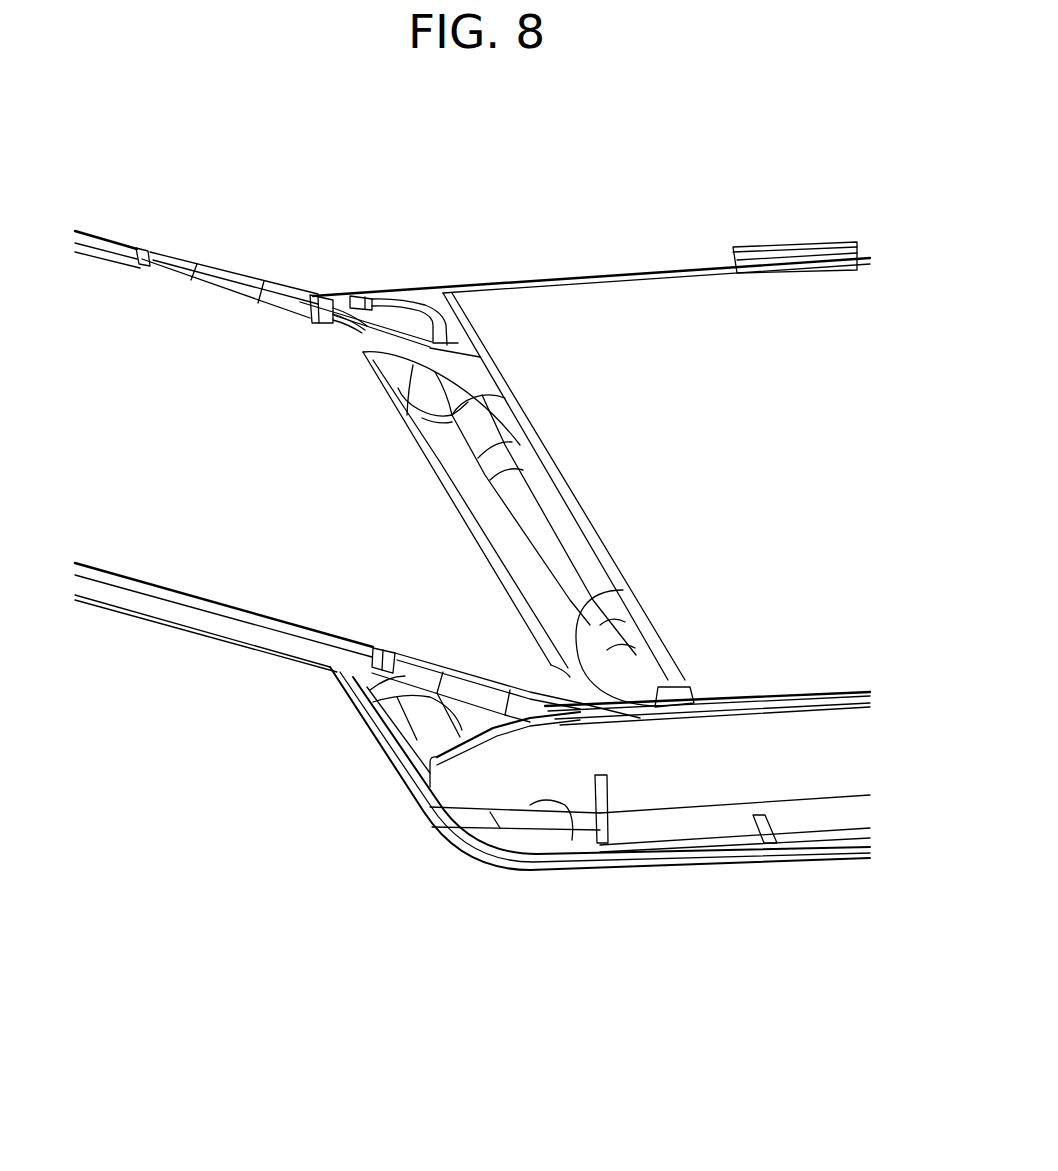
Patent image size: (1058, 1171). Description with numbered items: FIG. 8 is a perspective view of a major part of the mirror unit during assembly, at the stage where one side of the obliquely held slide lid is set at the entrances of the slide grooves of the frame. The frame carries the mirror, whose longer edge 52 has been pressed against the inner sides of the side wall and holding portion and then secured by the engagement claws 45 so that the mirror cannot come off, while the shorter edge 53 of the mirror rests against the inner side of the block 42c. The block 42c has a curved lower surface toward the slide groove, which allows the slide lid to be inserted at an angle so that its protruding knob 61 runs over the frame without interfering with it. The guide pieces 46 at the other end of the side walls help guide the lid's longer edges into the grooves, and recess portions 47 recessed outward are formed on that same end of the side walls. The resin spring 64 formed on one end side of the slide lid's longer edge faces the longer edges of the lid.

The block 42c is at (435, 292).
The engagement claw 45 is at (800, 257).
The guide piece 46 is at (466, 785).
The recess portion 47 is at (363, 296).
The longer edge 52 is at (650, 277).
The shorter edge 53 is at (607, 723).
The knob 61 is at (498, 523).
The resin spring 64 is at (233, 273).